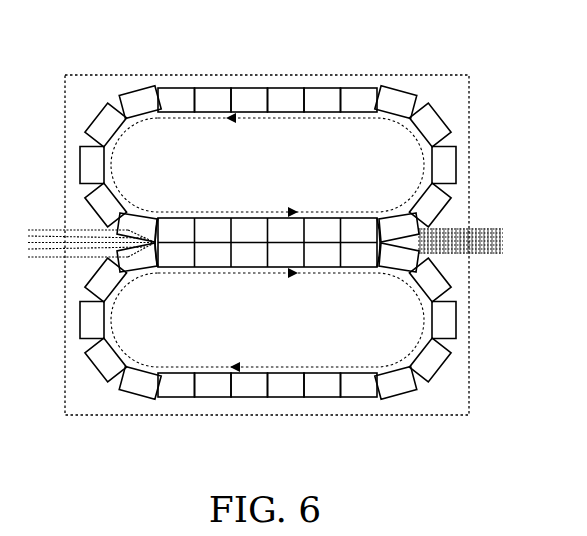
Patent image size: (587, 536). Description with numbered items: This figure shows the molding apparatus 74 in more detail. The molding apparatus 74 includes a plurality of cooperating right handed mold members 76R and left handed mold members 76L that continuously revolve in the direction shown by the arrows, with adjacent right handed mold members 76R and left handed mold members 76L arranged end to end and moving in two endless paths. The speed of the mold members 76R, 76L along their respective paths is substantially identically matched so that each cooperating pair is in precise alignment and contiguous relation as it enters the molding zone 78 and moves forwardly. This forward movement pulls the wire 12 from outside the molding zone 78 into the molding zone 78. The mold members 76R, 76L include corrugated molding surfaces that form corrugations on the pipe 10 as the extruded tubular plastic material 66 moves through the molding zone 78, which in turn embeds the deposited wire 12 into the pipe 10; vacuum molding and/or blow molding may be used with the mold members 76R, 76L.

The corrugated pipe 10 is at (486, 210).
The wire 12 is at (505, 246).
The tubular plastic material 66 is at (33, 230).
The molding apparatus 74 is at (317, 75).
The left handed mold members 76L is at (217, 88).
The right handed mold members 76R is at (255, 398).
The molding zone 78 is at (377, 300).